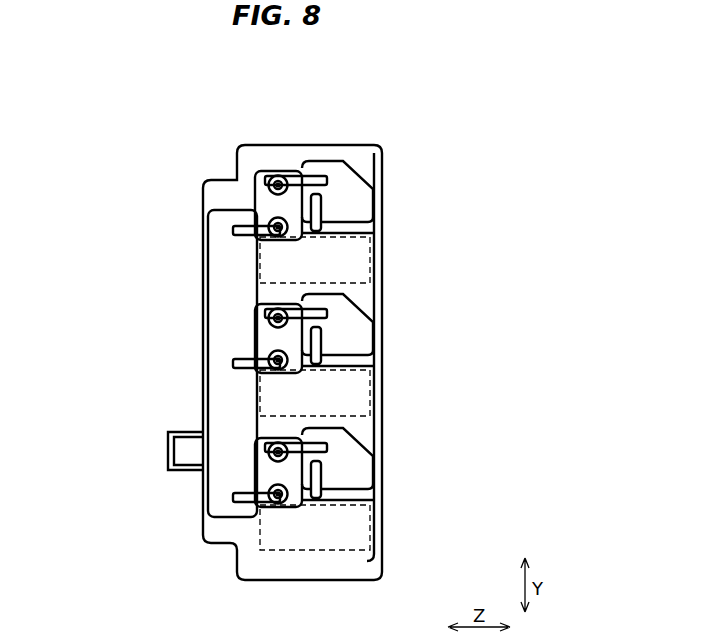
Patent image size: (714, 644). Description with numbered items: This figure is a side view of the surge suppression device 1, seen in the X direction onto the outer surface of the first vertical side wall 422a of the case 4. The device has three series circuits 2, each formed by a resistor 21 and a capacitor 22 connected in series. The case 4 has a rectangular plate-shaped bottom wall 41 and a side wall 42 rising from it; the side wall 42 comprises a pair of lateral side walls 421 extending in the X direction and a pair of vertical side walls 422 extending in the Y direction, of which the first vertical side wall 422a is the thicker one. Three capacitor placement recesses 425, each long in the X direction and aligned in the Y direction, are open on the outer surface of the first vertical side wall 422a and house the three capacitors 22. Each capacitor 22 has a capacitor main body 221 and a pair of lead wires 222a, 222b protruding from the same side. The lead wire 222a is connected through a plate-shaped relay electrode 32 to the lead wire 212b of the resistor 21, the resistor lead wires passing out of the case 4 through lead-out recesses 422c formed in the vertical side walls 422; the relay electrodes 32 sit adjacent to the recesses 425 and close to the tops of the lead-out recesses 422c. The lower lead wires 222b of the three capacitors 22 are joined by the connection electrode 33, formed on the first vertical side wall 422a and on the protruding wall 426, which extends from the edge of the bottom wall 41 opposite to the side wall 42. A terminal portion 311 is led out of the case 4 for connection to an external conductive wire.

The surge suppression device 1 is at (446, 91).
The series circuit 2 is at (301, 298).
The case 4 is at (281, 358).
The resistor 21 is at (302, 172).
The capacitor 22 is at (220, 335).
The relay electrode 32 is at (344, 186).
The connection electrode 33 is at (232, 384).
The bottom wall 41 is at (236, 553).
The side wall 42 is at (276, 358).
The lead wire 212b is at (316, 203).
The capacitor main body 221 is at (277, 200).
The lead wire 222a is at (290, 177).
The lead wire 222b is at (236, 231).
The terminal portion 311 is at (168, 450).
The lateral side wall 421 is at (276, 358).
The vertical side wall 422 is at (391, 260).
The first vertical side wall 422a is at (330, 270).
The lead-out recess 422c is at (386, 349).
The capacitor placement recess 425 is at (262, 180).
The protruding wall 426 is at (213, 506).